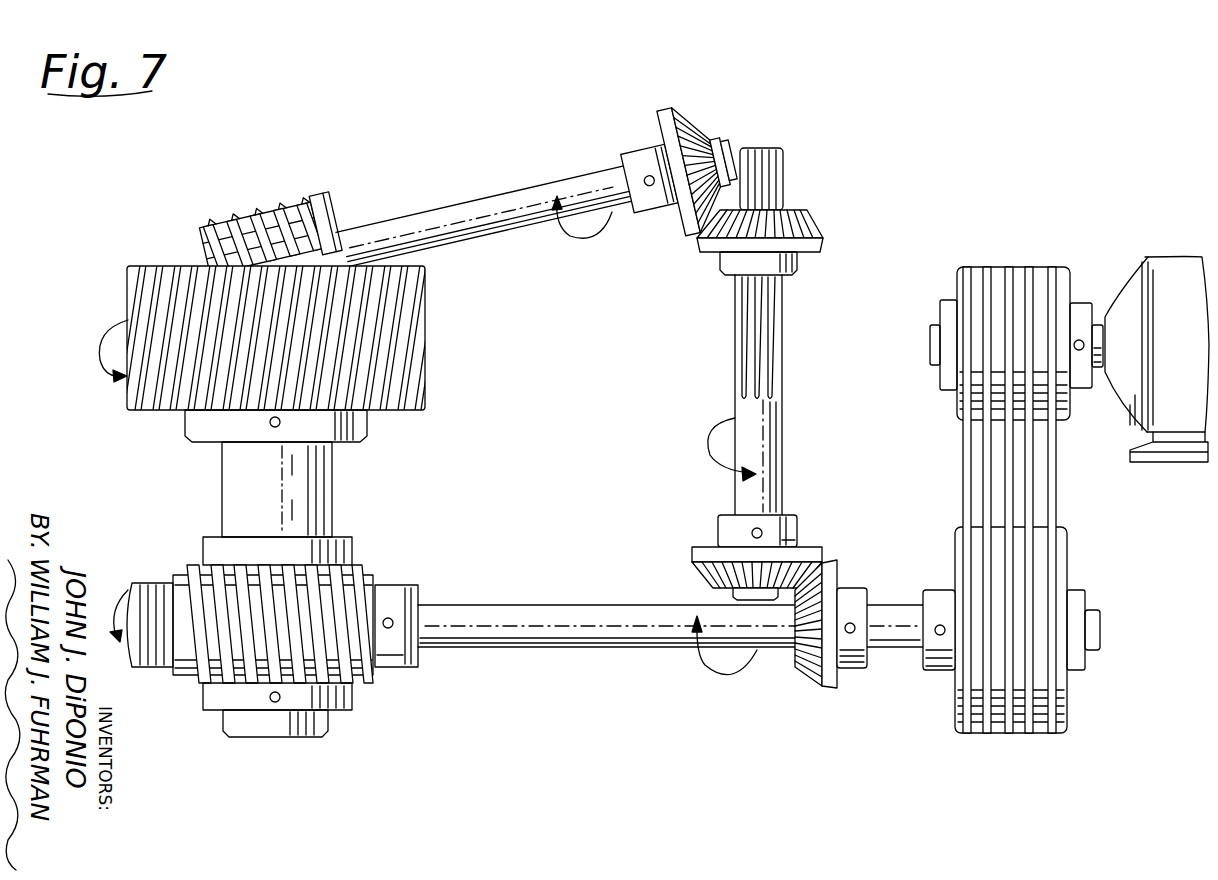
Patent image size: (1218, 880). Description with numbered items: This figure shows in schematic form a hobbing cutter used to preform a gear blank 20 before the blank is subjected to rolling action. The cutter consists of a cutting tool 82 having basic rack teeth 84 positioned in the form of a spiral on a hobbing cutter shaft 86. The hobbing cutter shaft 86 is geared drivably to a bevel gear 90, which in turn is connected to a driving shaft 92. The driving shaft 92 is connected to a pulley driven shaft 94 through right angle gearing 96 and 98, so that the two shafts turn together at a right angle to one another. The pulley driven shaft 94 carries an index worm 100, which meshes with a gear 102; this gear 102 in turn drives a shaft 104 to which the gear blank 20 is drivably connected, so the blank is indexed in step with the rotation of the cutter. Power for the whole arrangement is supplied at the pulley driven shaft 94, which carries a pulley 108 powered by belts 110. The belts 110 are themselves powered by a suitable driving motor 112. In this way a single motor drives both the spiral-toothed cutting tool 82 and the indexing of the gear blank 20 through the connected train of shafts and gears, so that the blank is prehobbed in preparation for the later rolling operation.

The gear blank 20 is at (418, 321).
The cutting tool 82 is at (308, 207).
The basic rack teeth 84 is at (229, 206).
The hobbing cutter shaft 86 is at (470, 198).
The bevel gear 90 is at (814, 216).
The driving shaft 92 is at (779, 397).
The pulley driven shaft 94 is at (892, 615).
The right angle gearing 96 is at (700, 565).
The right angle gearing 98 is at (806, 680).
The index worm 100 is at (352, 582).
The gear 102 is at (412, 585).
The shaft 104 is at (318, 482).
The pulley 108 is at (1070, 534).
The belts 110 is at (1064, 499).
The driving motor 112 is at (1166, 258).